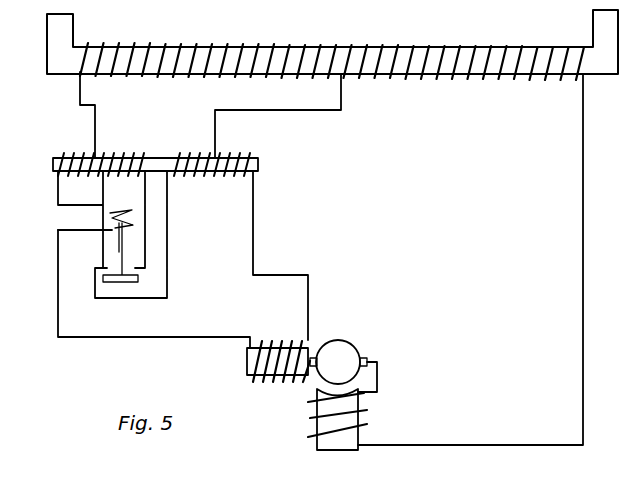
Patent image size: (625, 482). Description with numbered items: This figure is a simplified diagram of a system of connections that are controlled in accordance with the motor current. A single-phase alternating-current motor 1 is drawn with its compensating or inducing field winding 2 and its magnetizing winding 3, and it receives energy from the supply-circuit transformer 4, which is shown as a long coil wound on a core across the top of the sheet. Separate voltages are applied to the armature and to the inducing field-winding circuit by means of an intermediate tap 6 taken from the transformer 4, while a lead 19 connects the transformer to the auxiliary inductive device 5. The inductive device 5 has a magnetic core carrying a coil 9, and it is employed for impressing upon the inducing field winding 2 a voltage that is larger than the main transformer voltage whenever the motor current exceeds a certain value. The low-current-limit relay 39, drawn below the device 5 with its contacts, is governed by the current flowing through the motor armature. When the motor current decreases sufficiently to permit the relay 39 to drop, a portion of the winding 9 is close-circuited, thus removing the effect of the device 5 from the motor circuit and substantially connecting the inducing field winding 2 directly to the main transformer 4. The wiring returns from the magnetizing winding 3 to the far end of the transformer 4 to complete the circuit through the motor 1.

The motor 1 is at (379, 347).
The inducing field winding 2 is at (275, 380).
The magnetizing winding 3 is at (310, 419).
The supply-circuit transformer 4 is at (418, 78).
The auxiliary inductive device 5 is at (152, 158).
The intermediate tap 6 is at (318, 111).
The coil 9 is at (115, 158).
The lead wire 19 is at (79, 103).
The low-current-limit relay 39 is at (131, 213).